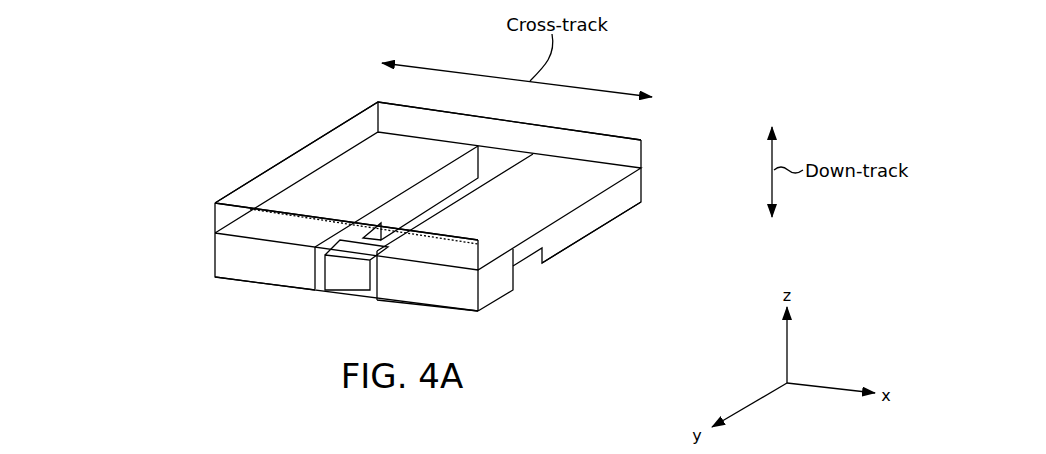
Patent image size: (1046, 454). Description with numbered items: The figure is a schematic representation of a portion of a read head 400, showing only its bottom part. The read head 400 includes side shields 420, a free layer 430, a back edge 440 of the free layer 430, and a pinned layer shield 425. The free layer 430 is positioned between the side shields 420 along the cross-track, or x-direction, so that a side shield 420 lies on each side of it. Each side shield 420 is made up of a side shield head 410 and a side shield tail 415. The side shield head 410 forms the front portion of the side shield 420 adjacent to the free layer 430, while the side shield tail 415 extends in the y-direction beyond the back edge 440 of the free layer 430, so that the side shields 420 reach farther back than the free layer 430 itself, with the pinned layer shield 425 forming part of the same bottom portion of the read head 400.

The read head 400 is at (125, 103).
The side shield head 410 is at (500, 286).
The side shield tail 415 is at (558, 239).
The side shield 420 is at (215, 260).
The pinned layer shield 425 is at (630, 157).
The free layer 430 is at (350, 278).
The back edge of free layer 440 is at (358, 238).